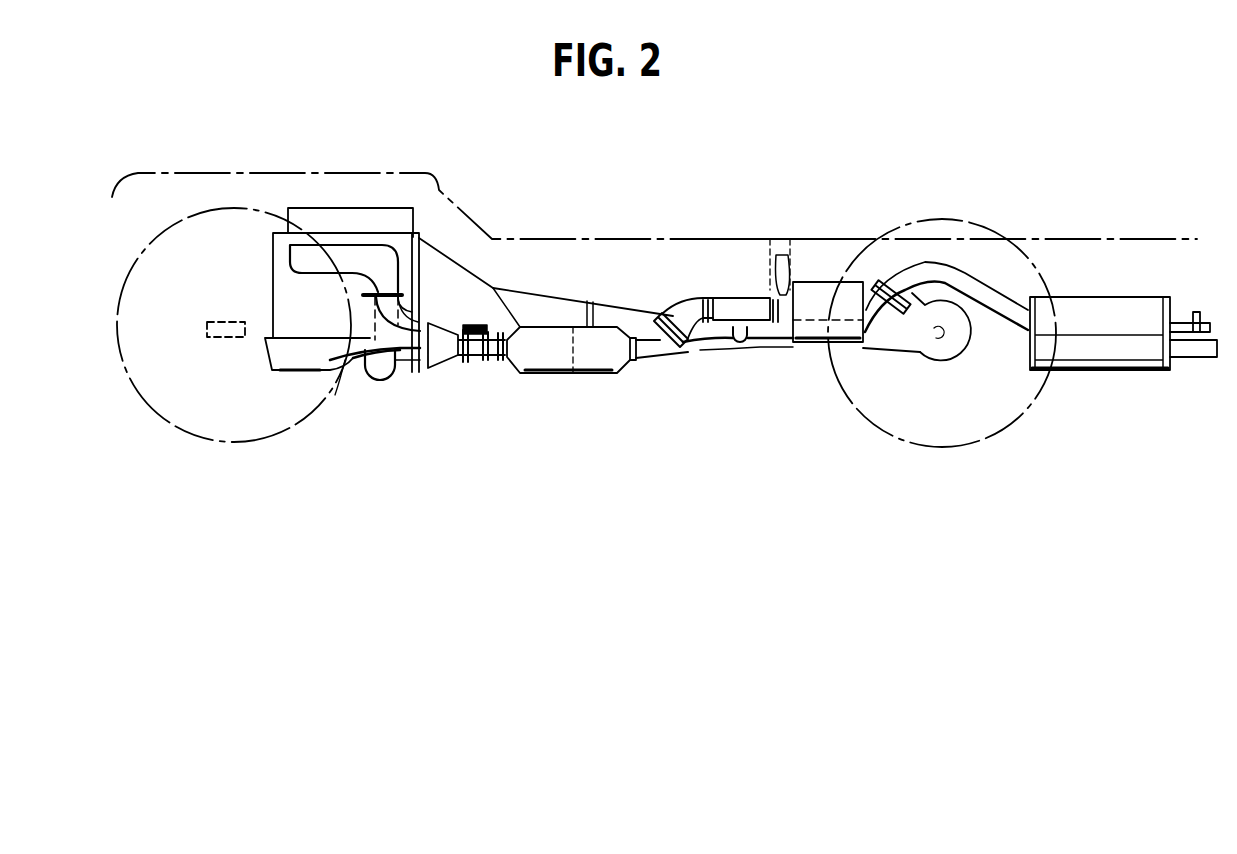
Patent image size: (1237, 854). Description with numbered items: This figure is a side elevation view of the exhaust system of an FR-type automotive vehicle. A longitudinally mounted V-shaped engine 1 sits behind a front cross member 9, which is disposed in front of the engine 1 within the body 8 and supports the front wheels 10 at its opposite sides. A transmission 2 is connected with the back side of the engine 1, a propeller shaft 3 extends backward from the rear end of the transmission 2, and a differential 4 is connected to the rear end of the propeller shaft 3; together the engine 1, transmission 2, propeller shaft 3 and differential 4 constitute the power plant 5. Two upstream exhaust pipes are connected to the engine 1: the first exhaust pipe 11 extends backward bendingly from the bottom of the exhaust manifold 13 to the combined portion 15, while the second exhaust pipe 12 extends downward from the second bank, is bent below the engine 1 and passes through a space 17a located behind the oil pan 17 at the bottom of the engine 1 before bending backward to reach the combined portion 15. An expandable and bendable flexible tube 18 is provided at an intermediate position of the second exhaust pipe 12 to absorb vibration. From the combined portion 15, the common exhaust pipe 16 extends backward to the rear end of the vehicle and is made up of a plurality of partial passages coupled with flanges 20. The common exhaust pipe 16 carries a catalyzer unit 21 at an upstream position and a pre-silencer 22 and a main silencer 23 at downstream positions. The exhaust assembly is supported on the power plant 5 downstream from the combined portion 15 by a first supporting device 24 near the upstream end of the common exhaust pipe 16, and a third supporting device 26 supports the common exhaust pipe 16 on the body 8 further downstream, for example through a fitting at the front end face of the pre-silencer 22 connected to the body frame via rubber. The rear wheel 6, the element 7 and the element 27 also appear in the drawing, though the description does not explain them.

The engine 1 is at (273, 262).
The transmission 2 is at (555, 295).
The propeller shaft 3 is at (773, 347).
The differential 4 is at (958, 362).
The power plant 5 is at (628, 302).
The rear wheel 6 is at (1000, 437).
The rear suspension member 7 is at (935, 340).
The body 8 is at (694, 239).
The front cross member 9 is at (215, 338).
The front wheels 10 is at (222, 443).
The first exhaust pipe 11 is at (423, 307).
The second exhaust pipe 12 is at (390, 362).
The exhaust manifold 13 is at (358, 250).
The combined portion 15 is at (440, 366).
The common exhaust pipe 16 is at (640, 360).
The oil pan 17 is at (282, 375).
The space 17a is at (335, 402).
The flexible tube 18 is at (365, 382).
The flanges 20 is at (690, 350).
The catalyzer unit 21 is at (565, 375).
The pre-silencer 22 is at (810, 348).
The main silencer 23 is at (1110, 372).
The first supporting device 24 is at (490, 322).
The third supporting device 26 is at (797, 282).
The sub muffler 27 is at (730, 298).